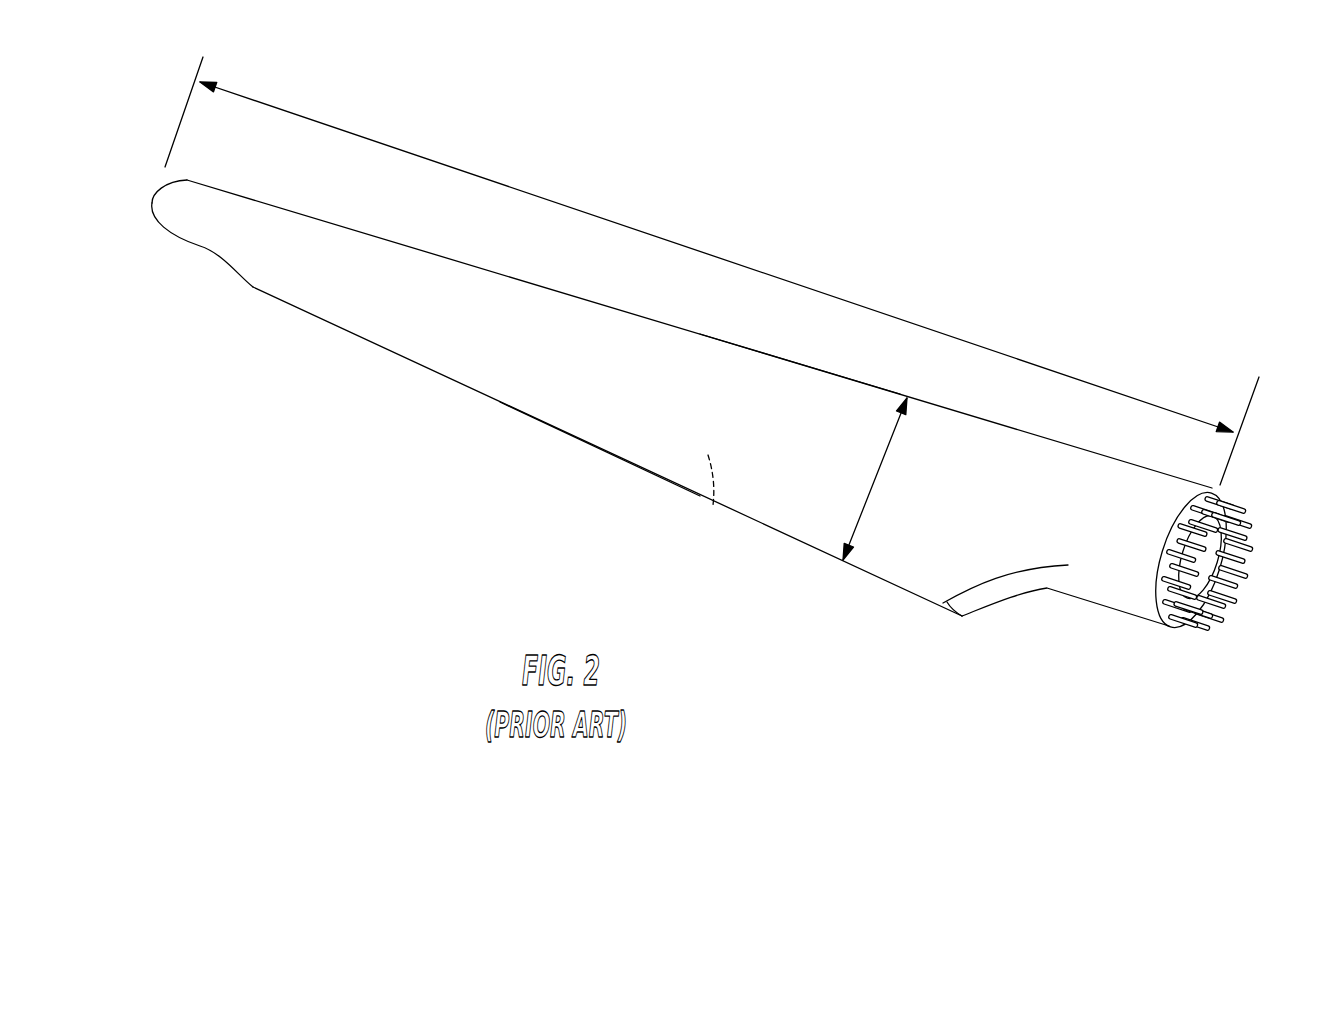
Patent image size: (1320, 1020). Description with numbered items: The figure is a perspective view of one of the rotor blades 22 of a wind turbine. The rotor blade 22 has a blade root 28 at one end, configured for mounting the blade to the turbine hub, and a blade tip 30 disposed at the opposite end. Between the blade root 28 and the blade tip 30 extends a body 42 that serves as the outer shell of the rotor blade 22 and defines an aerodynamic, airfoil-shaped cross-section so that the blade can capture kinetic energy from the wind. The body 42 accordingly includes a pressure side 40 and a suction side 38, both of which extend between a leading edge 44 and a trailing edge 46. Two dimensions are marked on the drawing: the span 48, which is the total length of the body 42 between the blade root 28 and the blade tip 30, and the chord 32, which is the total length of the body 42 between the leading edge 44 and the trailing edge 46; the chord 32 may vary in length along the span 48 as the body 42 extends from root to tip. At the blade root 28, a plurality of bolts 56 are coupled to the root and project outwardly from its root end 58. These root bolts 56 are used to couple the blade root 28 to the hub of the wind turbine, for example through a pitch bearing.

The rotor blade 22 is at (714, 403).
The blade root 28 is at (1108, 607).
The blade tip 30 is at (152, 197).
The chord 32 is at (872, 495).
The suction side 38 is at (552, 325).
The pressure side 40 is at (713, 502).
The body 42 is at (448, 345).
The leading edge 44 is at (750, 348).
The trailing edge 46 is at (560, 430).
The span 48 is at (732, 260).
The bolts 56 is at (1240, 517).
The root end 58 is at (1175, 627).